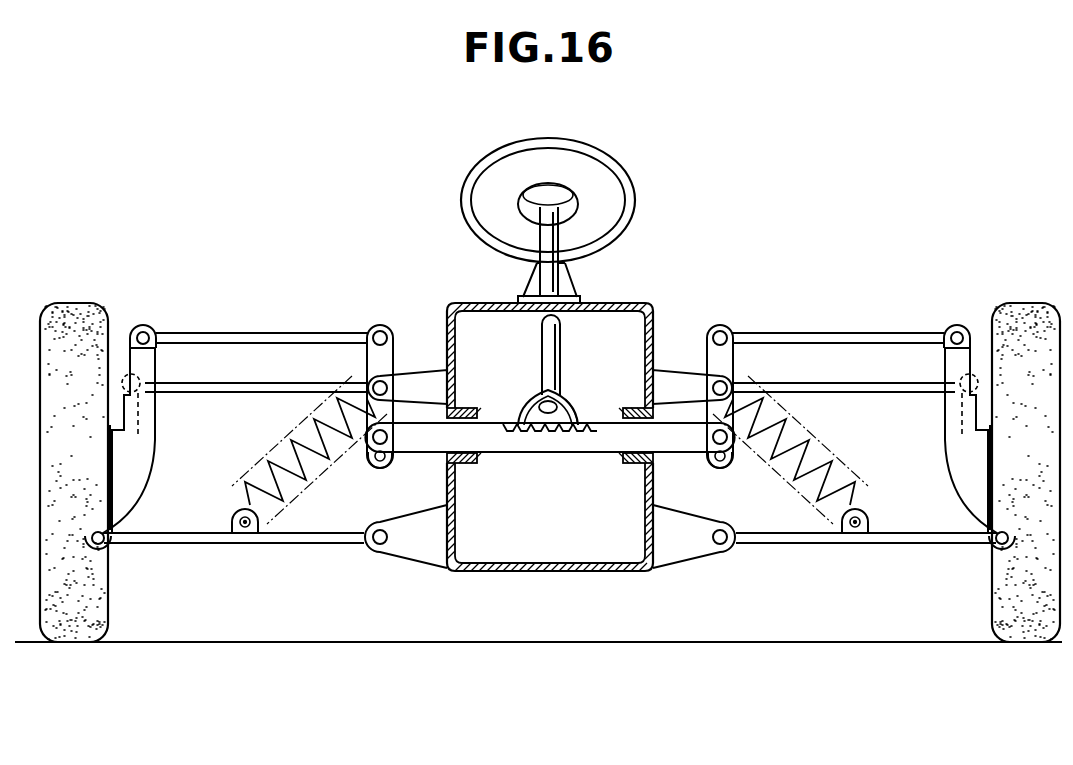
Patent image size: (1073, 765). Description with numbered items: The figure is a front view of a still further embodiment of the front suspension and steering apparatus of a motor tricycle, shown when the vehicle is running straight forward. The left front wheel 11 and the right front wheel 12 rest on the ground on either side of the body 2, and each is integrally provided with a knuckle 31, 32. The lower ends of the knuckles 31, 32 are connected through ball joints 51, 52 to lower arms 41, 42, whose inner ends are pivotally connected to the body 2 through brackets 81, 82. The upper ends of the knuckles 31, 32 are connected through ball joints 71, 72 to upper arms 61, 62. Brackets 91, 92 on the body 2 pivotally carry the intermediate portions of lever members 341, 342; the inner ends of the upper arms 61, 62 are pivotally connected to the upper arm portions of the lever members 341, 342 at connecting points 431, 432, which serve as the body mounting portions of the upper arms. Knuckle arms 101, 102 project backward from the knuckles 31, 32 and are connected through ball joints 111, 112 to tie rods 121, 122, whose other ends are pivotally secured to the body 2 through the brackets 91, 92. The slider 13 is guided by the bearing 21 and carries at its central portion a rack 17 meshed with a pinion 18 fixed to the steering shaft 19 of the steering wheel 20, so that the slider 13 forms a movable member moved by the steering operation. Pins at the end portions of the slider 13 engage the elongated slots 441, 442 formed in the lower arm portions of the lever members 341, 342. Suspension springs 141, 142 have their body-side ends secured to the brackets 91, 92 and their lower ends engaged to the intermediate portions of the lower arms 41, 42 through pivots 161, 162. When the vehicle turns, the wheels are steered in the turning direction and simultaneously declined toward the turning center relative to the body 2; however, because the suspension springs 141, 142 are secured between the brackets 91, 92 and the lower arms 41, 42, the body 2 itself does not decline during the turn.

The left front wheel 11 is at (1015, 645).
The right front wheel 12 is at (83, 645).
The body 2 is at (470, 302).
The knuckle 31 is at (943, 458).
The knuckle 32 is at (157, 457).
The lower arm 41 is at (805, 545).
The lower arm 42 is at (316, 545).
The ball joint 51 is at (990, 548).
The ball joint 52 is at (107, 548).
The upper arm 61 is at (843, 332).
The upper arm 62 is at (282, 332).
The ball joint 71 is at (950, 327).
The ball joint 72 is at (149, 330).
The bracket 81 is at (693, 556).
The bracket 82 is at (410, 556).
The bracket 91 is at (684, 368).
The bracket 92 is at (414, 372).
The knuckle arm 101 is at (958, 410).
The knuckle arm 102 is at (137, 412).
The ball joint 111 is at (970, 373).
The ball joint 112 is at (128, 373).
The tie rod 121 is at (832, 394).
The tie rod 122 is at (262, 394).
The slider 13 is at (560, 455).
The suspension spring 141 is at (778, 487).
The suspension spring 142 is at (308, 487).
The pivot 161 is at (855, 535).
The pivot 162 is at (244, 535).
The rack 17 is at (586, 403).
The pinion 18 is at (520, 397).
The steering shaft 19 is at (563, 340).
The steering wheel 20 is at (628, 158).
The bearing 21 is at (472, 466).
The lever member 341 is at (734, 356).
The lever member 342 is at (366, 362).
The connecting point 431 is at (720, 323).
The connecting point 432 is at (378, 323).
The elongated slot 441 is at (718, 465).
The elongated slot 442 is at (385, 467).